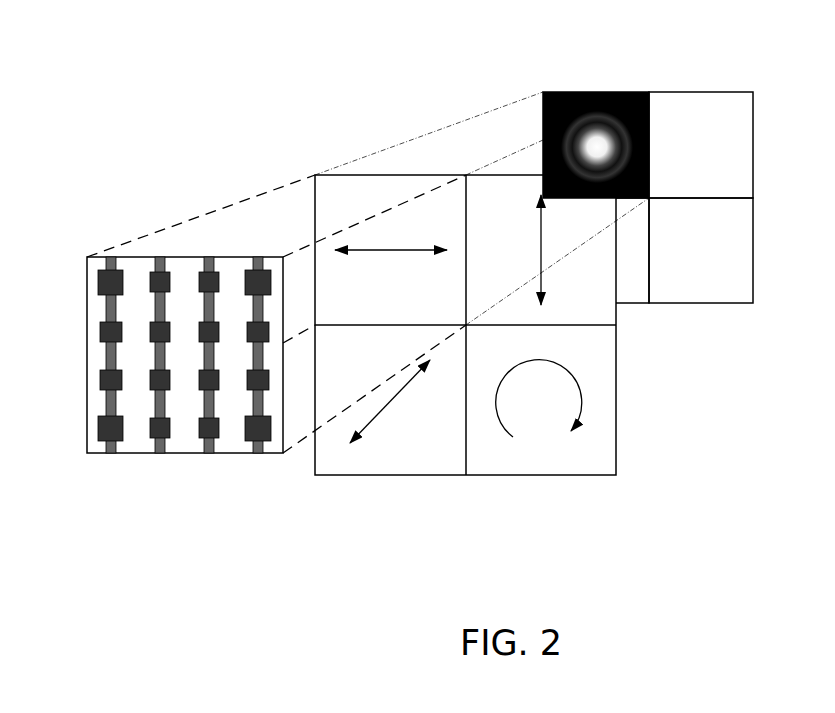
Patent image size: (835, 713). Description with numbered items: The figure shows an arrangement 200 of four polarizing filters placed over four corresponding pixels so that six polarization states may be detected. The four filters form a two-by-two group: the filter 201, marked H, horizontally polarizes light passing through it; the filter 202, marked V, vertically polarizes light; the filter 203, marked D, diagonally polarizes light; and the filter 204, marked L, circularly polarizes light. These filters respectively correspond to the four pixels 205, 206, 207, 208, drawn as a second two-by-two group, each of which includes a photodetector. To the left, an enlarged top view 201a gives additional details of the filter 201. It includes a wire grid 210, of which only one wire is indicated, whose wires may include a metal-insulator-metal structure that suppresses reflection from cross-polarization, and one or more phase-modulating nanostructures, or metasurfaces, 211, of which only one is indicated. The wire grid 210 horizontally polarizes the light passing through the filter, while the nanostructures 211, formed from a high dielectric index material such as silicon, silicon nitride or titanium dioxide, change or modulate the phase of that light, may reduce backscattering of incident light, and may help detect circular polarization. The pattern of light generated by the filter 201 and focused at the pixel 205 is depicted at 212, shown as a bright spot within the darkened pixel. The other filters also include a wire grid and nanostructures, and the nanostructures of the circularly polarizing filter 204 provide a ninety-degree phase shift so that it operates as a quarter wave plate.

The arrangement 200 is at (270, 85).
The top view of polarizing filter 201a is at (154, 310).
The wire grid 210 is at (110, 313).
The phase-modulating nanostructures 211 is at (102, 276).
The polarizing filter (H) 201 is at (330, 225).
The polarizing filter (V) 202 is at (483, 183).
The polarizing filter (D) 203 is at (338, 462).
The circularly polarizing filter (L) 204 is at (575, 462).
The pixel 205 is at (582, 114).
The pixel 206 is at (733, 98).
The pixel 207 is at (630, 293).
The pixel 208 is at (733, 293).
The pattern of light 212 is at (548, 82).